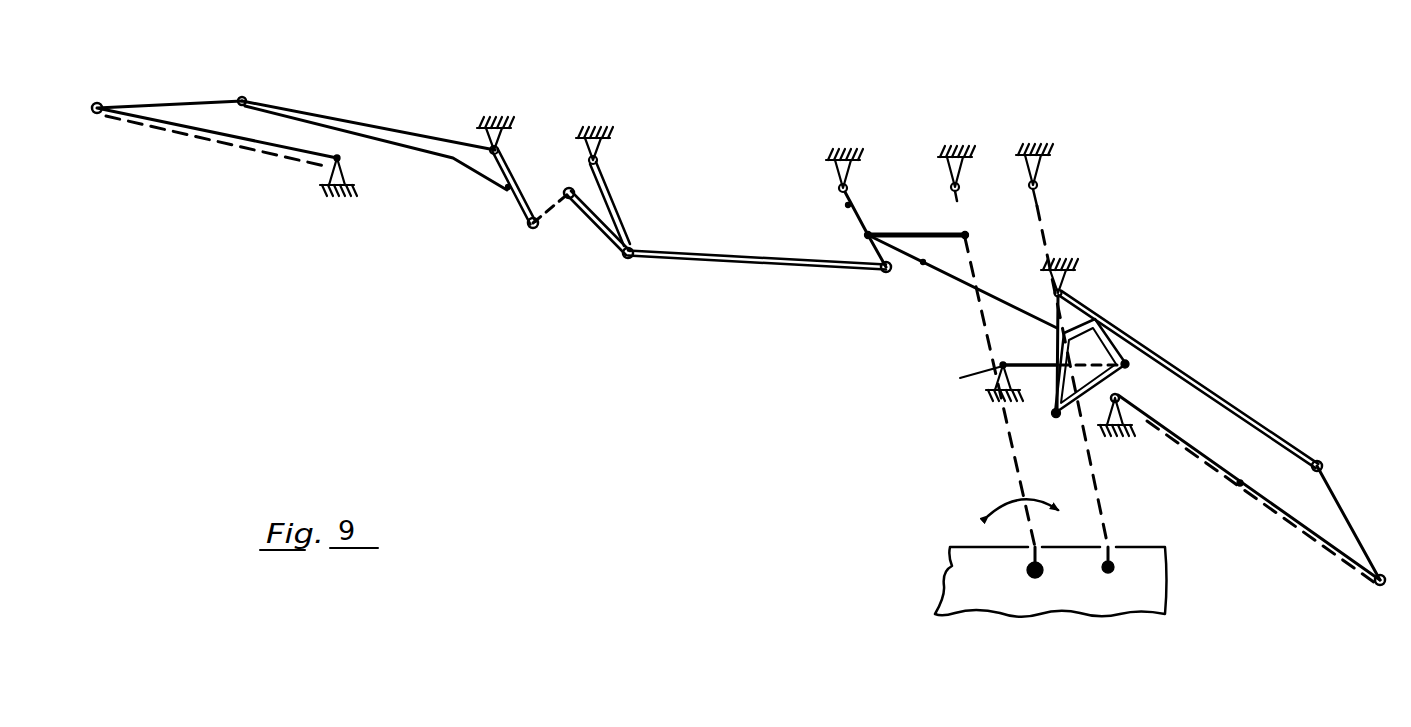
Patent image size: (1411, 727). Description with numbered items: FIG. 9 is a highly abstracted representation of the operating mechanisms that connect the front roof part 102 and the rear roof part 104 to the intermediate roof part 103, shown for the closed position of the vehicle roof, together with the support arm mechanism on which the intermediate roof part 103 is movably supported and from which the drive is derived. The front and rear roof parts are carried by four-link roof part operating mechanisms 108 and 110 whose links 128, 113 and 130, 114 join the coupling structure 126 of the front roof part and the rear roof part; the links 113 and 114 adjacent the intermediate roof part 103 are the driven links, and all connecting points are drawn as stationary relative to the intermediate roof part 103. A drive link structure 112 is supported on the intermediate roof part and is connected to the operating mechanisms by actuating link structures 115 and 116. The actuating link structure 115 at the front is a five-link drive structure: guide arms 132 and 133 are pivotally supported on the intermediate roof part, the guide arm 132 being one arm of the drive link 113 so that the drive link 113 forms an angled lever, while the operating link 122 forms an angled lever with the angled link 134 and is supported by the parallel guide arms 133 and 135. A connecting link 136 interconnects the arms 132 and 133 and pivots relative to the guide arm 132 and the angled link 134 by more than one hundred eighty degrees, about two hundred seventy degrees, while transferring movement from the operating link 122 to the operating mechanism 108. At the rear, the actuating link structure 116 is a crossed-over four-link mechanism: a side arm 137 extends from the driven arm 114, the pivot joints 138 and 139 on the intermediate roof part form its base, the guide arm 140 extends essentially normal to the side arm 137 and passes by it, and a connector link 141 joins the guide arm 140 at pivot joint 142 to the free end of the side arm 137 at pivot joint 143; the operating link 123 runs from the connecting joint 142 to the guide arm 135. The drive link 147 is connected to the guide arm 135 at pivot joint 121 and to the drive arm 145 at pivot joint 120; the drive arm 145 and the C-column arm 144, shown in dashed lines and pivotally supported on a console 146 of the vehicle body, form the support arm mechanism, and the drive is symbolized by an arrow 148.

The front roof part 102 is at (163, 96).
The intermediate roof part 103 is at (328, 186).
The rear roof part 104 is at (1385, 506).
The roof part operating mechanism 108 is at (213, 208).
The roof part operating mechanism 110 is at (1290, 550).
The drive link structure 112 is at (790, 146).
The drive link 113 is at (305, 118).
The driven arm 114 is at (1244, 410).
The actuating link structure 115 is at (549, 90).
The actuating link structure 116 is at (1153, 289).
The pivot joint 120 is at (968, 236).
The pivot joint 121 is at (864, 237).
The operating link 122 is at (694, 270).
The operating link 123 is at (925, 266).
The coupling structure 126 is at (190, 100).
The link 128 is at (152, 127).
The link 130 is at (1241, 488).
The guide arm 132 is at (507, 193).
The guide arm 133 is at (610, 192).
The angled link 134 is at (600, 223).
The guide arm 135 is at (845, 207).
The connecting link 136 is at (557, 217).
The side arm 137 is at (1052, 346).
The pivot joint 138 is at (1039, 280).
The pivot joint 139 is at (962, 378).
The guide arm 140 is at (1002, 362).
The connector link 141 is at (1121, 397).
The pivot joint 142 is at (1133, 347).
The pivot joint 143 is at (1052, 420).
The C-column arm 144 is at (1102, 517).
The drive arm 145 is at (1012, 458).
The console 146 is at (968, 562).
The drive link 147 is at (920, 234).
The arrow 148 is at (1000, 522).